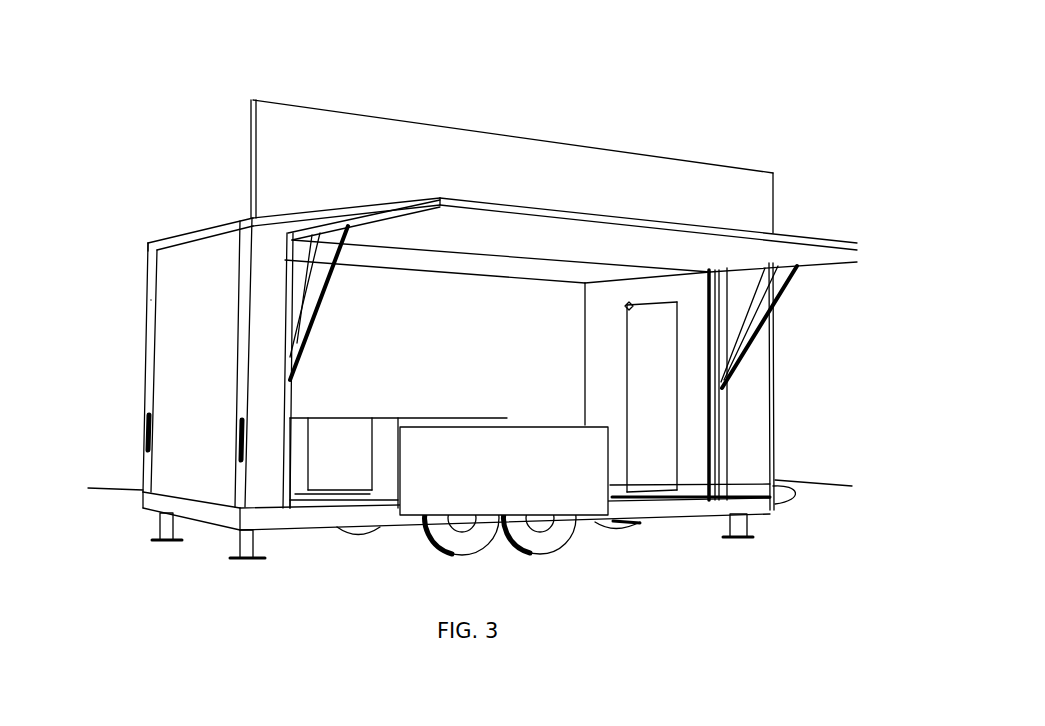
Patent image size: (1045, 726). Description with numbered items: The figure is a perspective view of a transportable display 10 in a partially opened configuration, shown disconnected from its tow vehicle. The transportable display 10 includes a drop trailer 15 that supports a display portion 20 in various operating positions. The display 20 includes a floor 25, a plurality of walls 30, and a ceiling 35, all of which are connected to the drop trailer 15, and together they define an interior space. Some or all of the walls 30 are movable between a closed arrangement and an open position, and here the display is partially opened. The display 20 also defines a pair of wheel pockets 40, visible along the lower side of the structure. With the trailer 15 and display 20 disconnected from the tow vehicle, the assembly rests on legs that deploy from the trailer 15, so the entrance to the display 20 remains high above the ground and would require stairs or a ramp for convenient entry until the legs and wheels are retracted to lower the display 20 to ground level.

The transportable display 10 is at (713, 112).
The drop trailer 15 is at (512, 570).
The display portion 20 is at (404, 364).
The floor 25 is at (318, 497).
The walls 30 is at (177, 322).
The ceiling 35 is at (388, 258).
The wheel pockets 40 is at (465, 487).